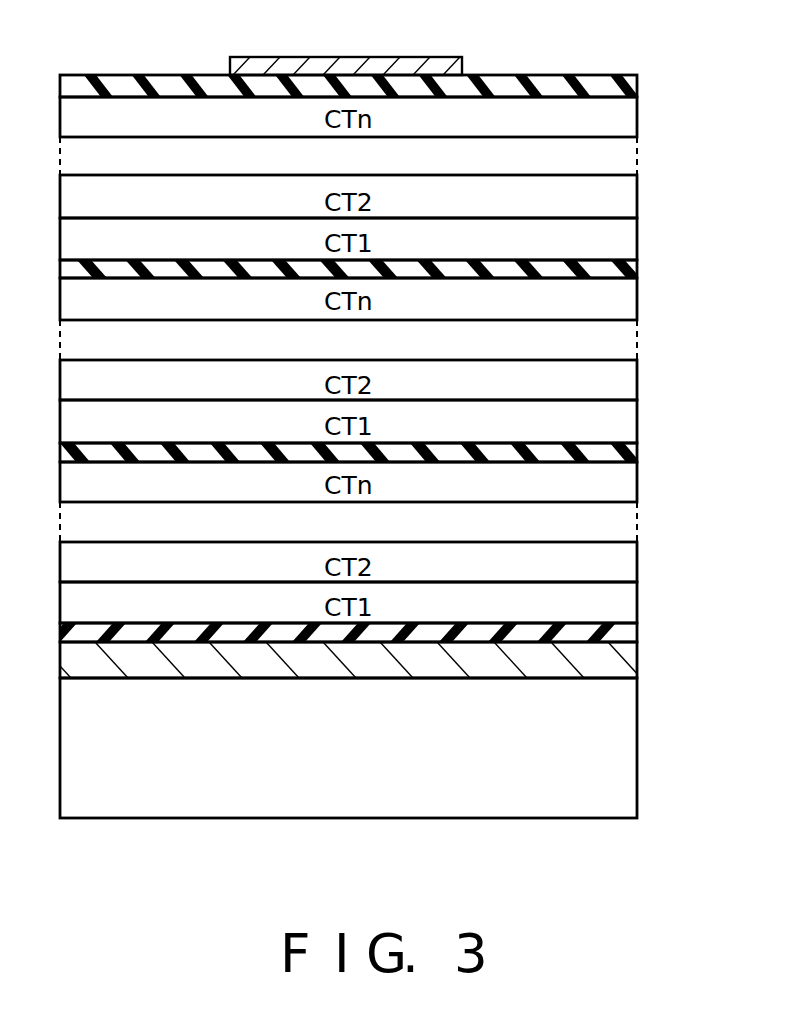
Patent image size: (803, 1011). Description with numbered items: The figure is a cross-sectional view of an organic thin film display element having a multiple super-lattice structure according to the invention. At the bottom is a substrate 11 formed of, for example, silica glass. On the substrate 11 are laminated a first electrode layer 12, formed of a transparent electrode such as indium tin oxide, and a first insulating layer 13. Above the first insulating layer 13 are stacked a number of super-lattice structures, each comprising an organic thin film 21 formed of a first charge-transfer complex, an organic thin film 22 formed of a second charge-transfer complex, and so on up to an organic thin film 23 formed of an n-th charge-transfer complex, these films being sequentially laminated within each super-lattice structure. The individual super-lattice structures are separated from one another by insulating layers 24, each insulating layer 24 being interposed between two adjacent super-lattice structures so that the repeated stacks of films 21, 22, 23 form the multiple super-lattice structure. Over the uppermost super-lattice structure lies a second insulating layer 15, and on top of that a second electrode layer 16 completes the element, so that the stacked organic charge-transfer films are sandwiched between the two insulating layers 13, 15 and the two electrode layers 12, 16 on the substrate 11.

The substrate 11 is at (628, 760).
The first electrode layer 12 is at (628, 665).
The first insulating layer 13 is at (628, 635).
The second insulating layer 15 is at (640, 78).
The second electrode layer 16 is at (413, 60).
The organic thin film 21 is at (628, 605).
The organic thin film 22 is at (628, 566).
The organic thin film 23 is at (628, 483).
The insulating layer 24 is at (628, 453).